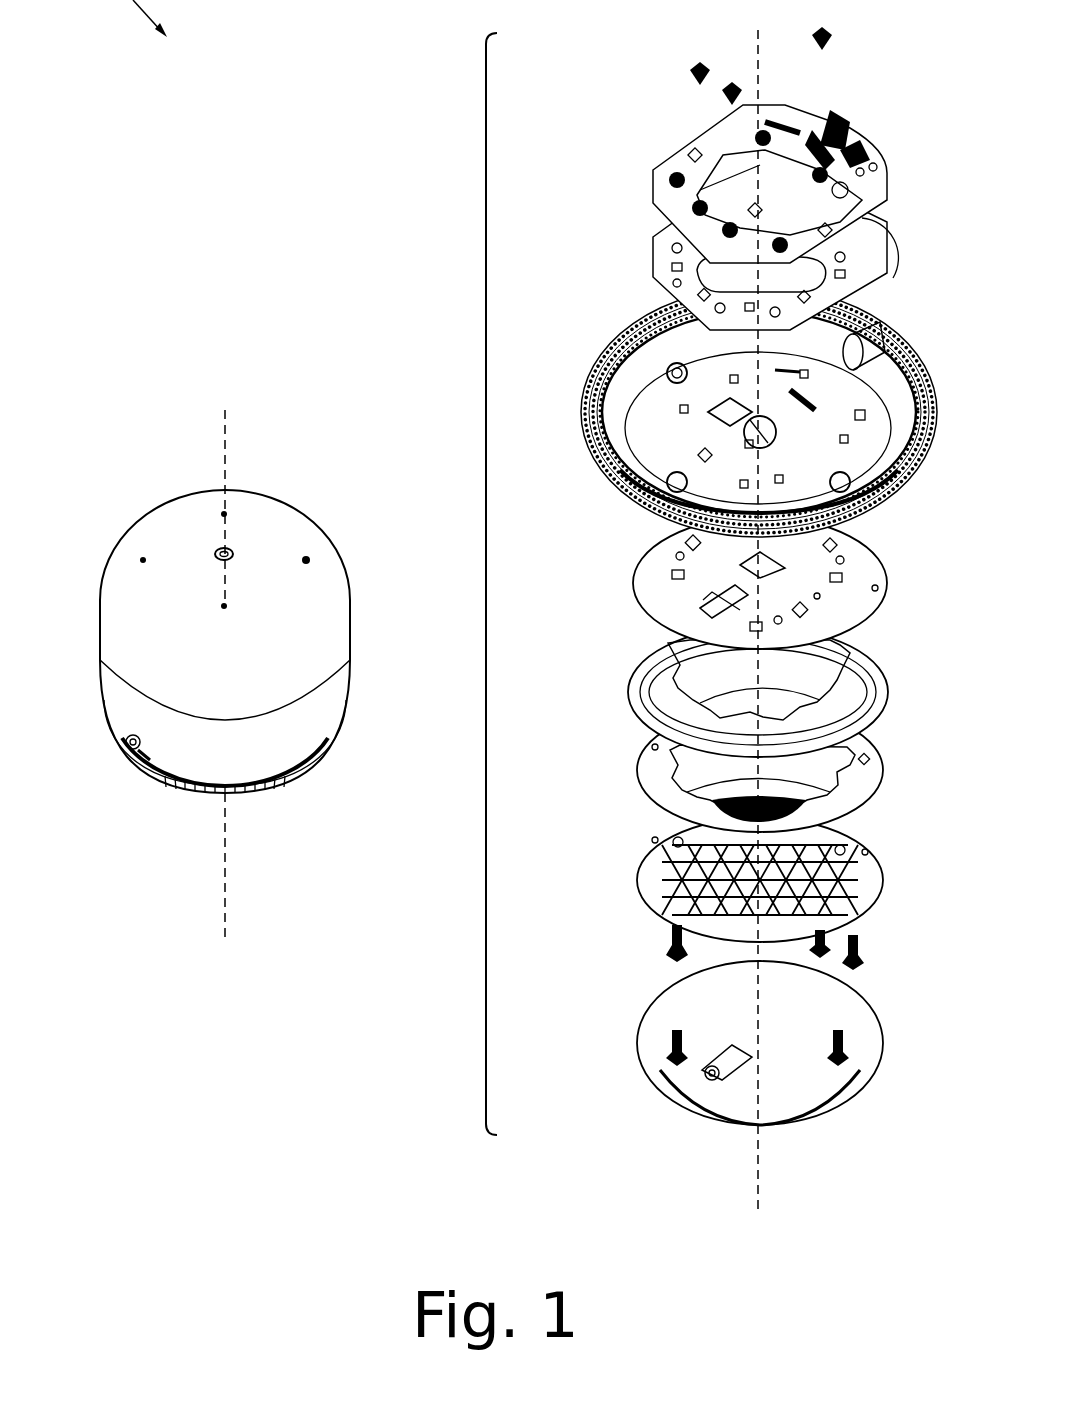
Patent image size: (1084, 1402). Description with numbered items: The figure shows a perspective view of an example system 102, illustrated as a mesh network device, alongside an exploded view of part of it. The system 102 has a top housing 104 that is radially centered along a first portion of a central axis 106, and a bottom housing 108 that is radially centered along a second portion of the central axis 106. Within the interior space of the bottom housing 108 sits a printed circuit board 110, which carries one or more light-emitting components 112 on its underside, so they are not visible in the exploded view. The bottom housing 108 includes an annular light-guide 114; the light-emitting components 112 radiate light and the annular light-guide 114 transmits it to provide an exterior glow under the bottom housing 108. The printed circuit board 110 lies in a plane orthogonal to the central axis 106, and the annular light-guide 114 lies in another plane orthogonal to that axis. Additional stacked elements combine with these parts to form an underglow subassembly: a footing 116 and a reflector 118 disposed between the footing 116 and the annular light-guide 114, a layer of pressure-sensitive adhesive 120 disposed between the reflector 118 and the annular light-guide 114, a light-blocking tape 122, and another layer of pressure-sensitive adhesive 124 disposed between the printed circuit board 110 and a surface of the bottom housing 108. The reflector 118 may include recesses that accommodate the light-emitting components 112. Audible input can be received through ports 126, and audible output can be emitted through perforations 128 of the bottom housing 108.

The system 102 is at (365, 396).
The top housing 104 is at (212, 490).
The central axis 106 is at (228, 460).
The bottom housing 108 is at (625, 333).
The printed circuit board 110 is at (657, 172).
The light-emitting components 112 is at (852, 236).
The annular light-guide 114 is at (630, 660).
The footing 116 is at (645, 1010).
The reflector 118 is at (638, 850).
The layer of pressure-sensitive adhesive 120 is at (637, 763).
The light-blocking tape 122 is at (632, 567).
The layer of pressure-sensitive adhesive 124 is at (652, 258).
The ports 126 is at (308, 560).
The perforations 128 is at (282, 782).